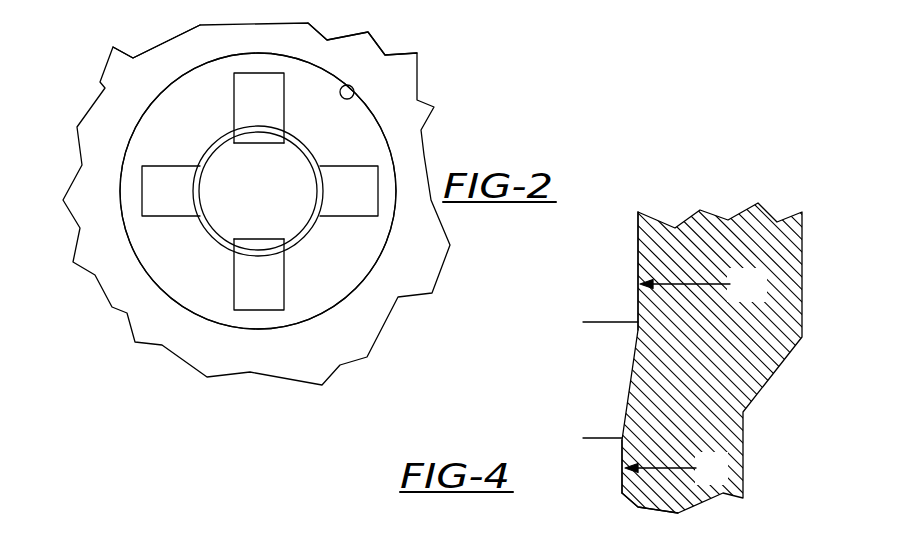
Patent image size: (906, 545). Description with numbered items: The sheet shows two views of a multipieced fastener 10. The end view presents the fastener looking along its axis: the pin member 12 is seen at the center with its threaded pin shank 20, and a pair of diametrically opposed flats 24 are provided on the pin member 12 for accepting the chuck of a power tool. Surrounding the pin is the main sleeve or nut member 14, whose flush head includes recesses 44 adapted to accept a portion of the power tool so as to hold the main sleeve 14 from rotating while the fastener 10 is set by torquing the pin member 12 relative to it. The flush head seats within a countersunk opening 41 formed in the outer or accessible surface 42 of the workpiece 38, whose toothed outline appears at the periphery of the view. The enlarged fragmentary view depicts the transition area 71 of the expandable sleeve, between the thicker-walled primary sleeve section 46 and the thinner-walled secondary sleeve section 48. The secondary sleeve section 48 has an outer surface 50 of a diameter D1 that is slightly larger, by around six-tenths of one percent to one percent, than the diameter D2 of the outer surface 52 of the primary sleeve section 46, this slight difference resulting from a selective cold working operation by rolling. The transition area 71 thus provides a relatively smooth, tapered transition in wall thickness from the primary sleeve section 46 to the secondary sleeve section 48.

In FIG. 2, the multipieced fastener 10 is at (400, 133).
In FIG. 2, the pin member 12 is at (275, 163).
In FIG. 2, the main sleeve or nut member 14 is at (138, 143).
In FIG. 2, the threaded pin shank 20 is at (287, 200).
In FIG. 2, the flats 24 is at (263, 142).
In FIG. 2, the workpiece 38 is at (168, 57).
In FIG. 2, the countersunk opening 41 is at (355, 93).
In FIG. 2, the outer or accessible surface 42 is at (358, 62).
In FIG. 2, the recesses 44 is at (253, 102).
In FIG. 4, the primary sleeve section 46 is at (652, 233).
In FIG. 4, the secondary sleeve section 48 is at (638, 488).
In FIG. 4, the outer surface 50 is at (622, 448).
In FIG. 4, the outer surface 52 is at (637, 307).
In FIG. 4, the transition area 71 is at (603, 323).
In FIG. 4, the diameter D1 is at (676, 468).
In FIG. 4, the diameter D2 is at (703, 285).